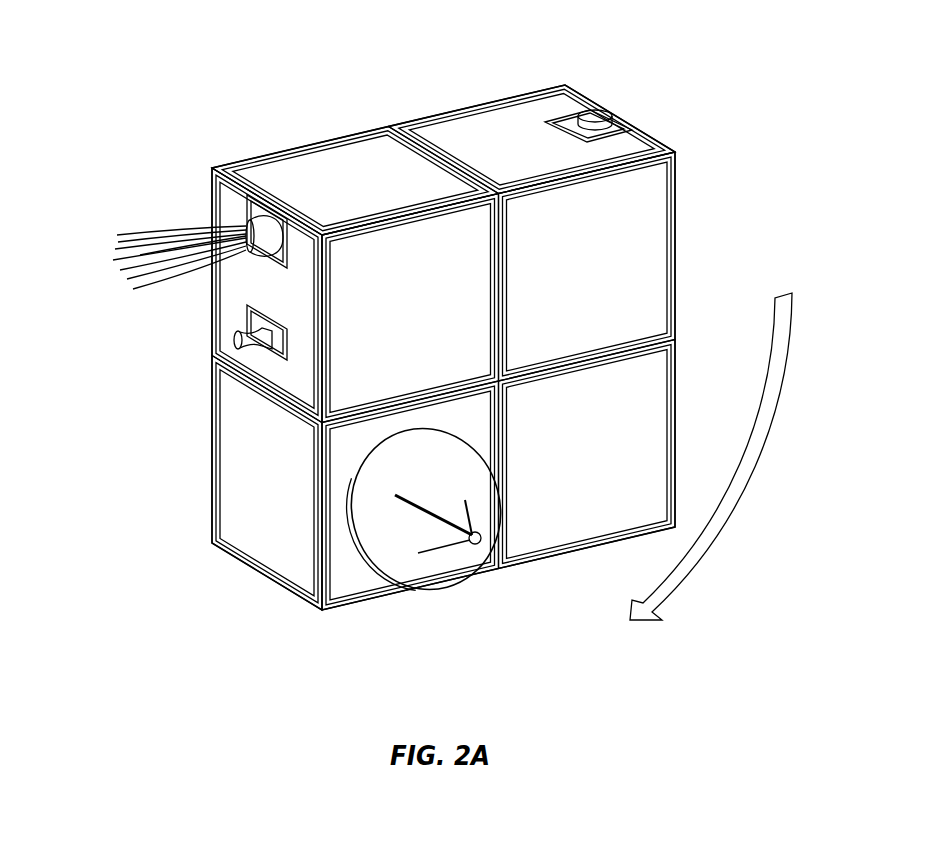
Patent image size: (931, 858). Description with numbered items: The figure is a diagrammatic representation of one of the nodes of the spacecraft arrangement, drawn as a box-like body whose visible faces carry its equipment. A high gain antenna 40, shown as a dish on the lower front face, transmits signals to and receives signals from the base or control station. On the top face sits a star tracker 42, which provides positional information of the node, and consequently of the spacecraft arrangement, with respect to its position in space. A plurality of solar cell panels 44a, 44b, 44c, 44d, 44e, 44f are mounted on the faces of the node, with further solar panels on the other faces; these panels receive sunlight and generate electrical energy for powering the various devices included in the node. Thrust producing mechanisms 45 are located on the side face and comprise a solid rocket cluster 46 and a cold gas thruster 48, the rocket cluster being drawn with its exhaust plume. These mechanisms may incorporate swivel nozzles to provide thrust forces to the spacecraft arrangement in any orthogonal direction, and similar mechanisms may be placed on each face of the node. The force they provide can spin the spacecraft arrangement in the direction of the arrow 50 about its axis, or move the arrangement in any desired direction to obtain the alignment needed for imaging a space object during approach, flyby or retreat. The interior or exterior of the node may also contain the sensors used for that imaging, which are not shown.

The high gain antenna 40 is at (418, 590).
The star tracker 42 is at (598, 112).
The solar cell panel 44a is at (648, 428).
The solar cell panel 44b is at (648, 258).
The solar cell panel 44c is at (473, 290).
The solar cell panel 44d is at (367, 152).
The solar cell panel 44e is at (490, 125).
The solar cell panel 44f is at (233, 328).
The thrust producing mechanisms 45 is at (150, 194).
The solid rocket cluster 46 is at (262, 224).
The cold gas thruster 48 is at (227, 342).
The arrow 50 is at (732, 522).